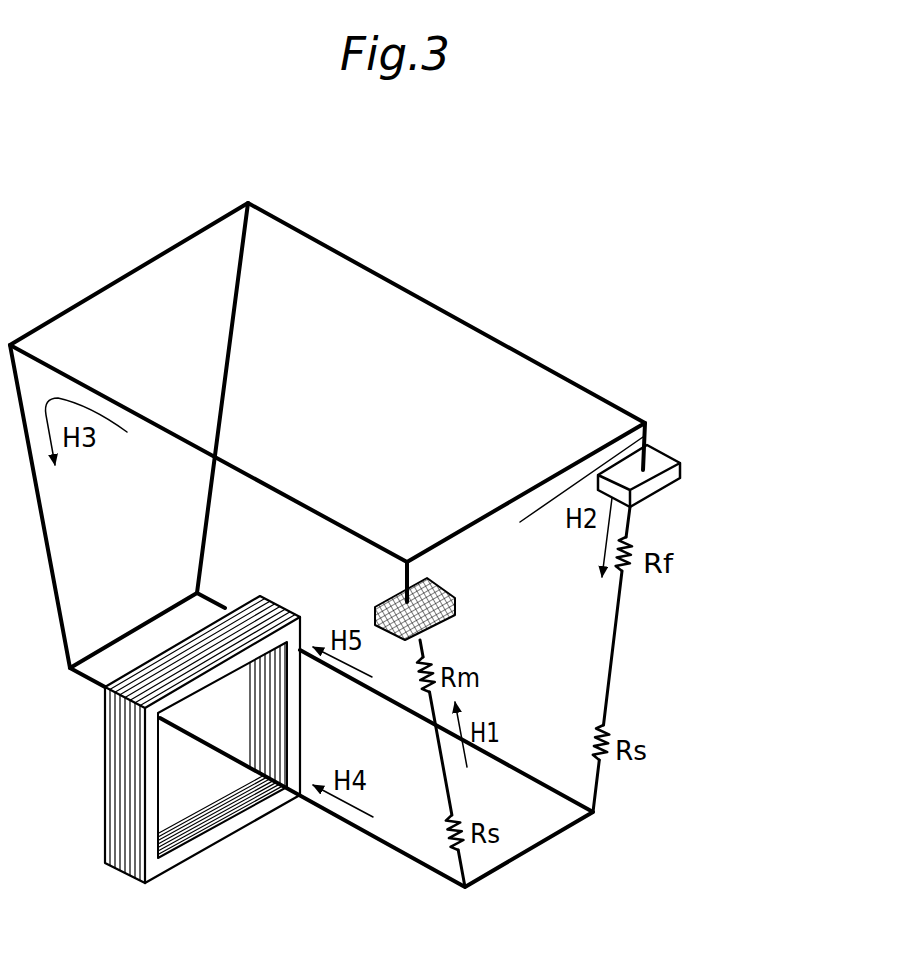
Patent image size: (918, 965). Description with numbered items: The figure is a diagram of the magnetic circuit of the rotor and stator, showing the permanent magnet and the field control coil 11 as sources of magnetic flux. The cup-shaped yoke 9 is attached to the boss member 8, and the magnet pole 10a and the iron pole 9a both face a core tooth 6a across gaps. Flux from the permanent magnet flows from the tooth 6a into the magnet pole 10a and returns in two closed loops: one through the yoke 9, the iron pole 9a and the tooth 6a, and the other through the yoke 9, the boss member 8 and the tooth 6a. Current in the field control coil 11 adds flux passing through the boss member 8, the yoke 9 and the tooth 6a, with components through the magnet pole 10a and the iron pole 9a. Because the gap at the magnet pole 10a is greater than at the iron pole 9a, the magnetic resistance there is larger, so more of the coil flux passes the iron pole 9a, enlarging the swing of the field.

The yoke 9 is at (437, 307).
The iron pole 9a is at (660, 460).
The magnet pole 10a is at (398, 593).
The boss member 8 is at (537, 780).
The core tooth 6a is at (613, 665).
The field control coil 11 is at (187, 837).